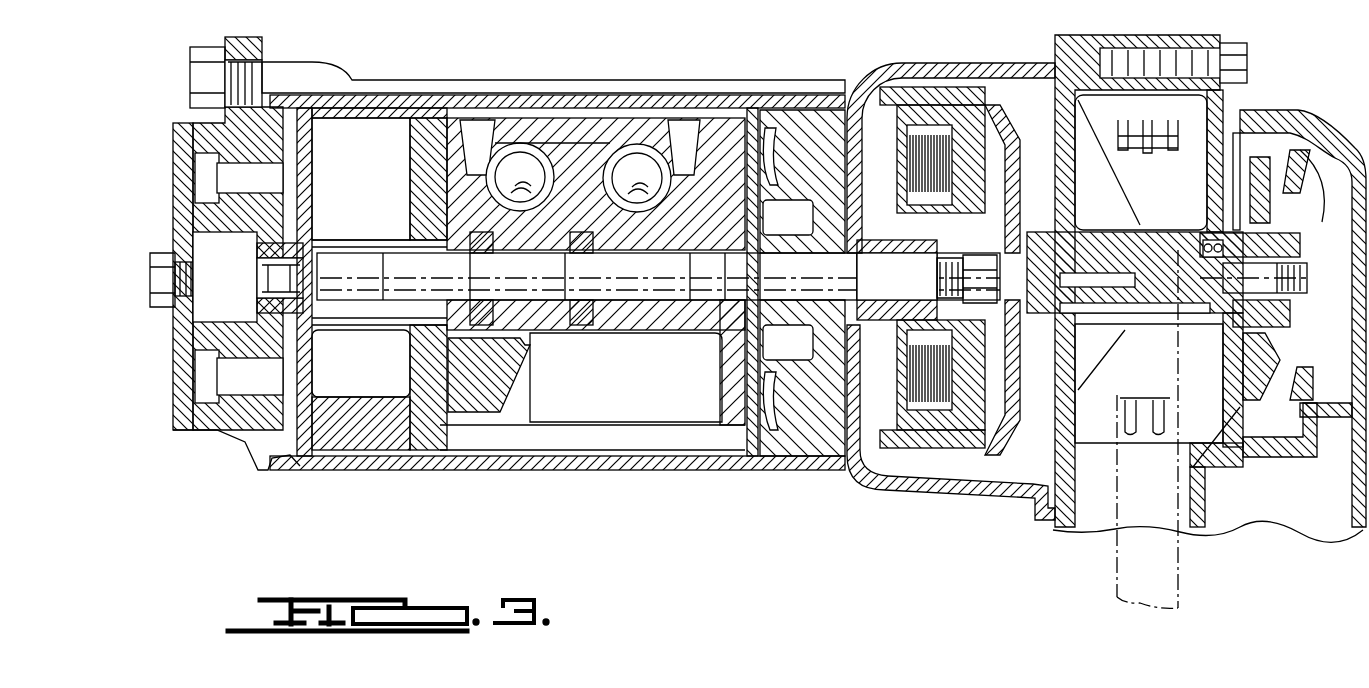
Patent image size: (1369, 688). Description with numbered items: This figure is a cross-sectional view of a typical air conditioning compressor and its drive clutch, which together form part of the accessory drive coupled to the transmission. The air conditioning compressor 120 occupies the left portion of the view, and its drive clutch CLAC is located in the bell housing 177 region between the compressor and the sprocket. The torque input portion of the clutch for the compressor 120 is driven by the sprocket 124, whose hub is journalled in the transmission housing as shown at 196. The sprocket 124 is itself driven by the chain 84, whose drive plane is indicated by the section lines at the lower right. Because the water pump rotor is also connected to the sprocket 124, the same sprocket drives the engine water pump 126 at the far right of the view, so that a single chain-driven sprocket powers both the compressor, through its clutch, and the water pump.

The air conditioning compressor 120 is at (553, 138).
The electromagnetic clutch CLAC is at (876, 118).
The bell housing 177 is at (990, 95).
The journal of the sprocket hub 196 is at (1122, 222).
The sprocket 124 is at (1150, 407).
The engine water pump 126 is at (1295, 242).
The chain 84 is at (1178, 557).